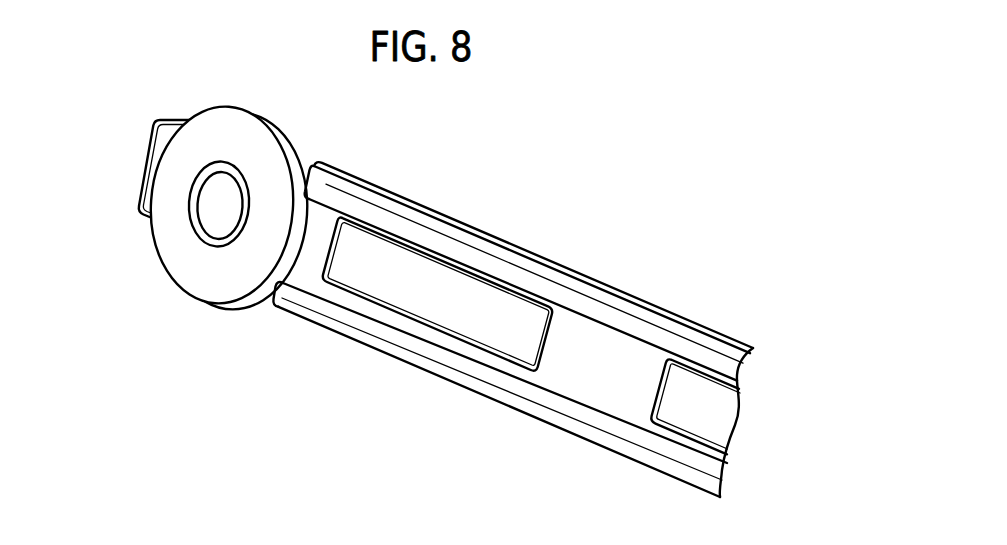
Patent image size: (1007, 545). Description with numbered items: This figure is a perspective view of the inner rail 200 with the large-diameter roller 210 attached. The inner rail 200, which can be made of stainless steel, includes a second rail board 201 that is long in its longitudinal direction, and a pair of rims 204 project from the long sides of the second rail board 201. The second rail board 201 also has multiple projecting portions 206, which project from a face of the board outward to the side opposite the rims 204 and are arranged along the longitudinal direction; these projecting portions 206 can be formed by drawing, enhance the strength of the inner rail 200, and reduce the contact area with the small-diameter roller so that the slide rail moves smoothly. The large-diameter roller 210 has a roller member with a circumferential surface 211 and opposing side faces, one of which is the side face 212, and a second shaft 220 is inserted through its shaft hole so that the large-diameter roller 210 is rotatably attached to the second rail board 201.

The inner rail 200 is at (552, 183).
The second rail board 201 is at (590, 395).
The rims 204 is at (602, 293).
The projecting portions 206 is at (507, 340).
The large-diameter roller 210 is at (200, 203).
The circumferential surface 211 is at (250, 297).
The side face 212 is at (162, 248).
The second shaft 220 is at (230, 183).